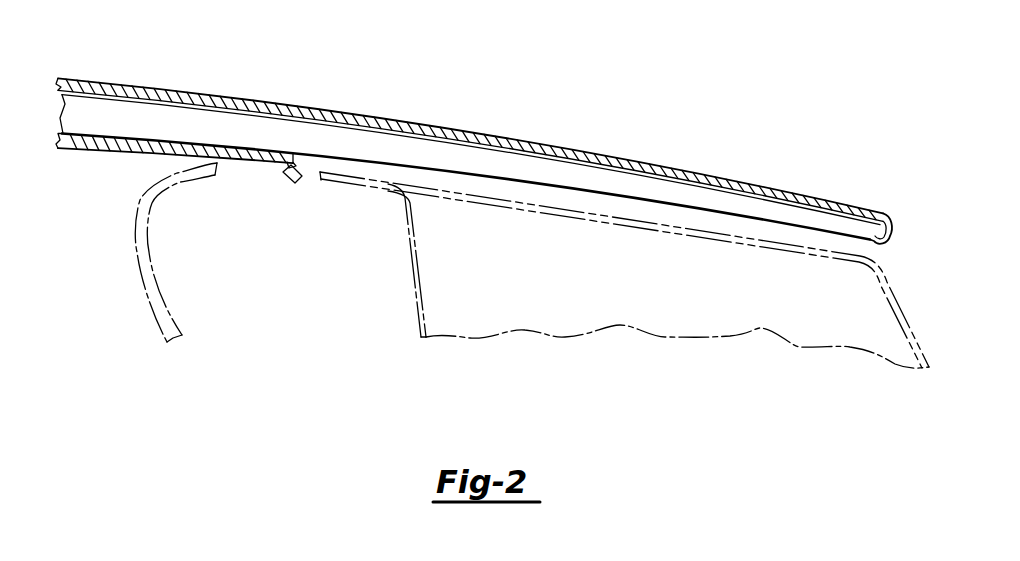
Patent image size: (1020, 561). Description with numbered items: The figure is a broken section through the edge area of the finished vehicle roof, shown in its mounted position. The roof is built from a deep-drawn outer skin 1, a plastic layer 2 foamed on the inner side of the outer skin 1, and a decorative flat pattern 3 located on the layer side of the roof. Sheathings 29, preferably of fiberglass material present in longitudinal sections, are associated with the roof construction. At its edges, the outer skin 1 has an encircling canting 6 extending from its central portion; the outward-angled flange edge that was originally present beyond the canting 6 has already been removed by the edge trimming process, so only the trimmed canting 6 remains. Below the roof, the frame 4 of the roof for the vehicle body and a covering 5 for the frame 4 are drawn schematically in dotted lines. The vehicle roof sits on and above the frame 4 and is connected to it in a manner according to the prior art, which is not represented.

The outer skin 1 is at (513, 146).
The sheathings 29 is at (207, 108).
The decorative flat pattern 3 is at (112, 145).
The plastic layer 2 is at (701, 208).
The frame of the roof 4 is at (405, 274).
The covering 5 is at (155, 274).
The encircling canting 6 is at (892, 230).